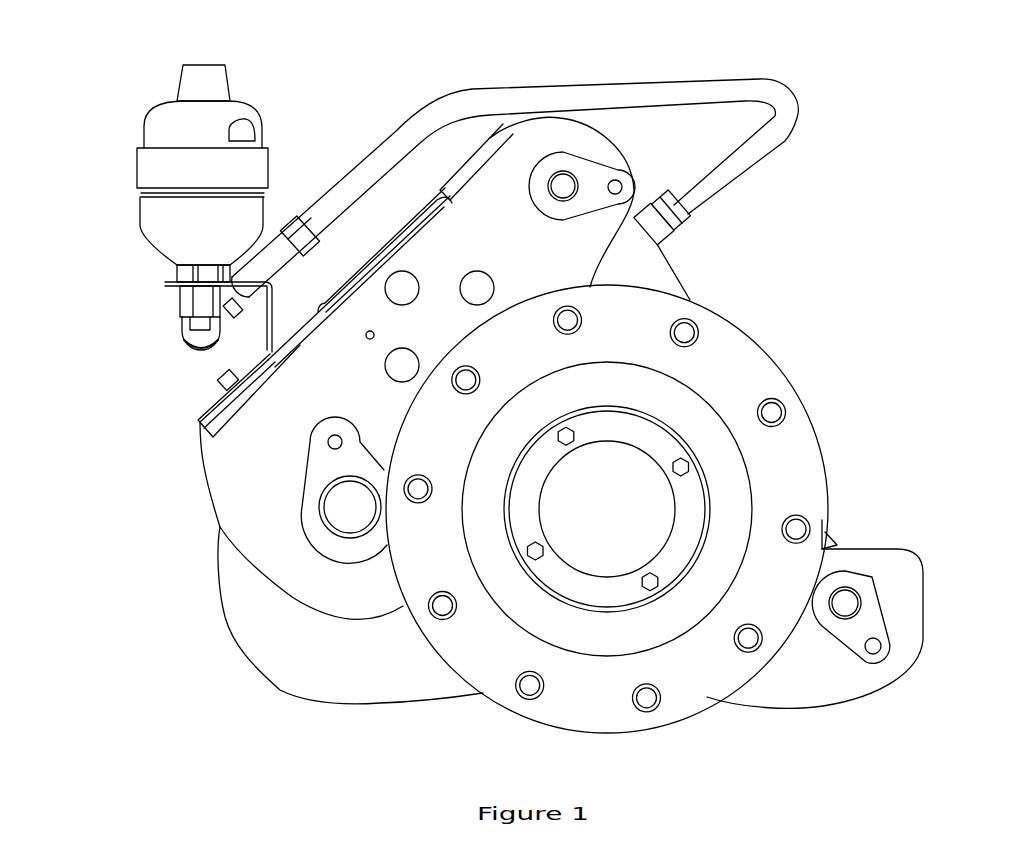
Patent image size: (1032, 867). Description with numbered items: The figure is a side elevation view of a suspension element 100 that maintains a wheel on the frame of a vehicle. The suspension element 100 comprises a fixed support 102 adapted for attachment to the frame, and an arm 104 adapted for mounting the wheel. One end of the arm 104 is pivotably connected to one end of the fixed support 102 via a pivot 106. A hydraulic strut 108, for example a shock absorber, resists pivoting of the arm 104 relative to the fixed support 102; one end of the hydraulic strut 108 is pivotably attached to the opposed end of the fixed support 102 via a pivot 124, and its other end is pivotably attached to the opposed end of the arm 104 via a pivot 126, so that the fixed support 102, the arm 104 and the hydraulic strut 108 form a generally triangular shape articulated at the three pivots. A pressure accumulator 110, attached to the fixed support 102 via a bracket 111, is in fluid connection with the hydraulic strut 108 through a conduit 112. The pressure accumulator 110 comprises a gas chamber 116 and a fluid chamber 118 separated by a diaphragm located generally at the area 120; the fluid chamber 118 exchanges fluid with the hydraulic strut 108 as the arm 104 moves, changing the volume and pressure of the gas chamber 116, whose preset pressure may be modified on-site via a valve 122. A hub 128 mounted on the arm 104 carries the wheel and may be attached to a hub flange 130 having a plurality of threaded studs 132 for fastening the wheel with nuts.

The suspension element 100 is at (918, 86).
The fixed support 102 is at (203, 472).
The arm 104 is at (247, 663).
The pivot 106 is at (345, 505).
The hydraulic strut 108 is at (683, 272).
The pressure accumulator 110 is at (121, 139).
The bracket 111 is at (250, 345).
The conduit 112 is at (560, 84).
The gas chamber 116 is at (262, 120).
The fluid chamber 118 is at (150, 238).
The diaphragm area 120 is at (140, 192).
The valve 122 is at (181, 74).
The pivot 124 is at (563, 185).
The pivot 126 is at (845, 603).
The hub 128 is at (675, 561).
The hub flange 130 is at (766, 352).
The threaded studs 132 is at (784, 409).